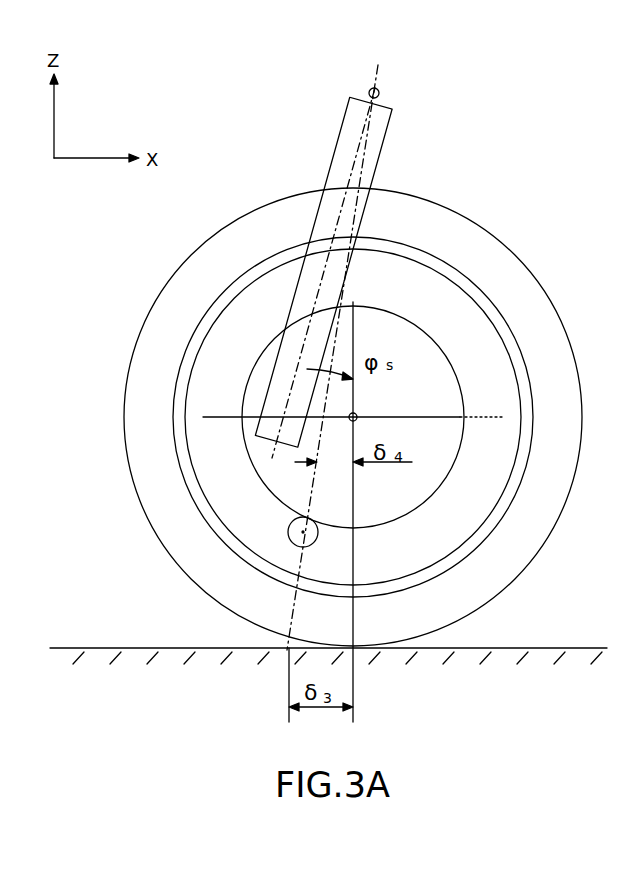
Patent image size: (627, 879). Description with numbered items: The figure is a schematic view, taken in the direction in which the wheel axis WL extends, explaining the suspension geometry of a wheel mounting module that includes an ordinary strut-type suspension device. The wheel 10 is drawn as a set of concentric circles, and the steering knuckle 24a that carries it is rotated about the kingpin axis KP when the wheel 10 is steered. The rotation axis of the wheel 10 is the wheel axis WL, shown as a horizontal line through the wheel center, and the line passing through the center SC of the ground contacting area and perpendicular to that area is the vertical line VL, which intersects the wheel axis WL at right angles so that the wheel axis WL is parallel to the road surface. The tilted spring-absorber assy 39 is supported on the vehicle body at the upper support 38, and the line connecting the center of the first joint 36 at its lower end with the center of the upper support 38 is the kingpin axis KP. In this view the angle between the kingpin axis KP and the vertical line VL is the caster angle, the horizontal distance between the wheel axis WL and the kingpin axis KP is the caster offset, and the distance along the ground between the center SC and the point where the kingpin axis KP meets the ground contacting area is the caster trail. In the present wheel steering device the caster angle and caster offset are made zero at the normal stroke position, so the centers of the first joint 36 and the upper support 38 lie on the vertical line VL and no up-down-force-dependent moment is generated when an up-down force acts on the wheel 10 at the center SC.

The wheel 10 is at (548, 326).
The steering knuckle 24a is at (405, 331).
The first joint 36 is at (290, 539).
The upper support 38 is at (380, 90).
The spring-absorber assy 39 is at (313, 222).
The kingpin axis KP is at (322, 462).
The wheel axis WL is at (356, 413).
The vertical line VL is at (356, 541).
The center of ground contacting area SC is at (357, 650).